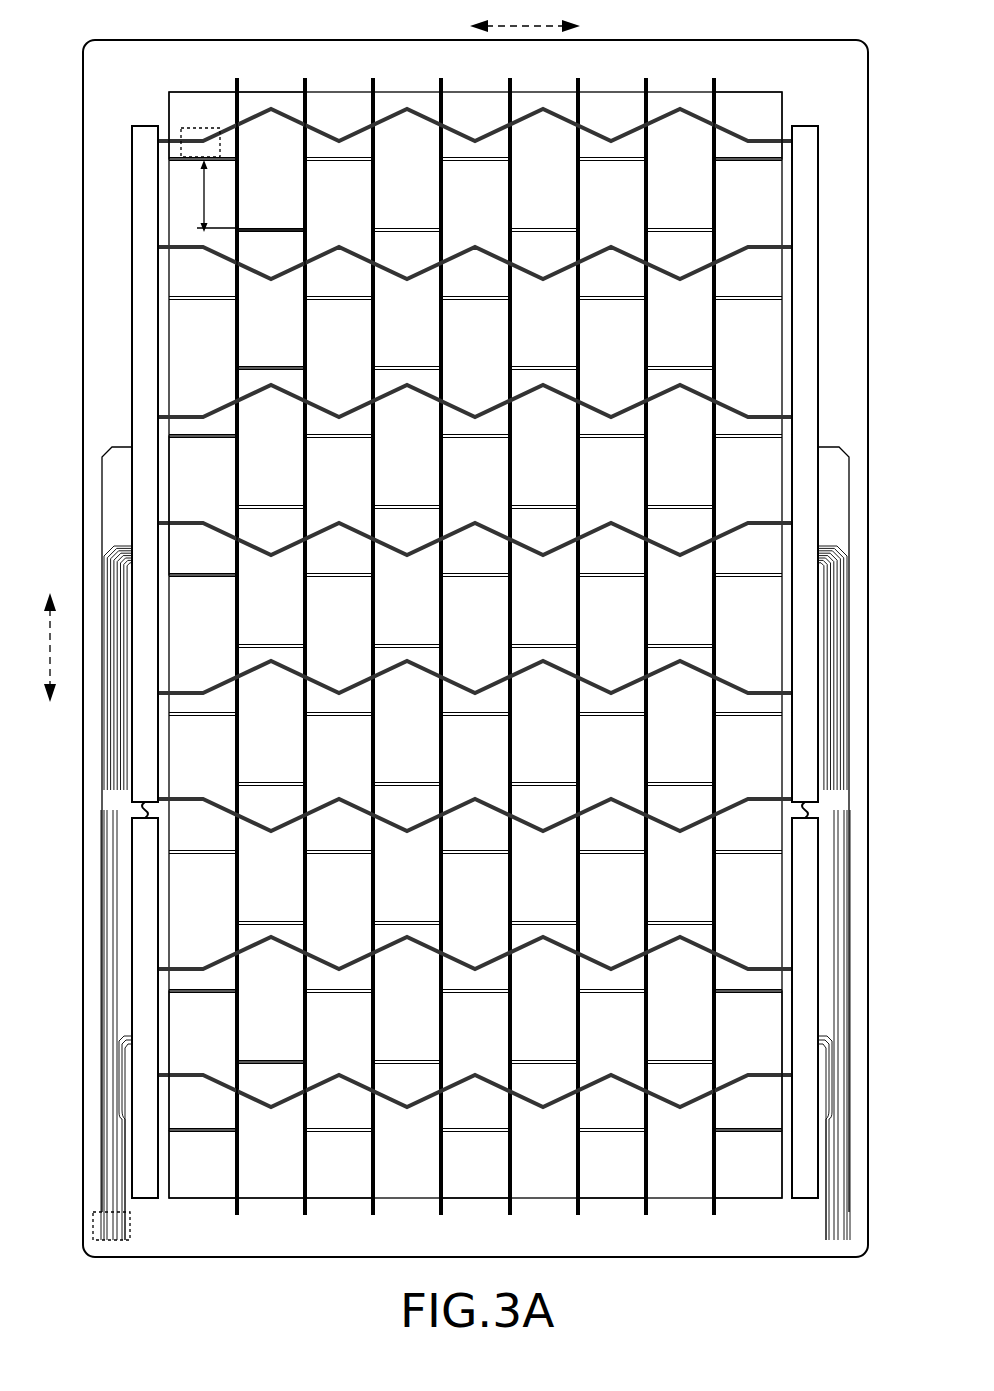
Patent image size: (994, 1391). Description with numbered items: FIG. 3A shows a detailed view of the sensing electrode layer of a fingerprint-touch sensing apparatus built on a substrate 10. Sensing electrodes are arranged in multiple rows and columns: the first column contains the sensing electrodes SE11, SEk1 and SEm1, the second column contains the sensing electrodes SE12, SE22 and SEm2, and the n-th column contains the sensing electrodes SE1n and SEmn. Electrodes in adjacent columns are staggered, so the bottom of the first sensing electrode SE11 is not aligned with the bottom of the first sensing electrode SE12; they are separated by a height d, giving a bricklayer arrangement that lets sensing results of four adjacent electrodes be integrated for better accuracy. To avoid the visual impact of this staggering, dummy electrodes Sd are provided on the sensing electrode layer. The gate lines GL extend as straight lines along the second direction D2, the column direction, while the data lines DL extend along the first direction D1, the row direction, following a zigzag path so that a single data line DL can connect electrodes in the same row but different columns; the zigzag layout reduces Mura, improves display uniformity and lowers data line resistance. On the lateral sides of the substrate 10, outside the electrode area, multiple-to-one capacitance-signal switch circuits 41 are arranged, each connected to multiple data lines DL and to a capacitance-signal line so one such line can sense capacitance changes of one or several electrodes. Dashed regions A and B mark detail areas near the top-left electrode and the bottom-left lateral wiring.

The substrate 10 is at (862, 350).
The capacitance-signal switch circuit 41 is at (130, 266).
The gate line GL is at (467, 633).
The data line DL is at (353, 126).
The first sensing electrode in the first column SE11 is at (203, 125).
The first sensing electrode in the second column SE12 is at (271, 161).
The first sensing electrode in the n-th column SE1n is at (748, 125).
The second sensing electrode in the second column SE22 is at (271, 299).
The k-th sensing electrode in the first column SEk1 is at (203, 505).
The m-th sensing electrode in the first column SEm1 is at (204, 1060).
The m-th sensing electrode in the second column SEm2 is at (271, 1130).
The m-th sensing electrode in the n-th column SEmn is at (748, 1060).
The dummy electrode Sd is at (475, 1164).
The detail region A is at (177, 130).
The detail region B is at (132, 1225).
The height d is at (213, 196).
The first direction D1 is at (525, 16).
The second direction D2 is at (36, 647).